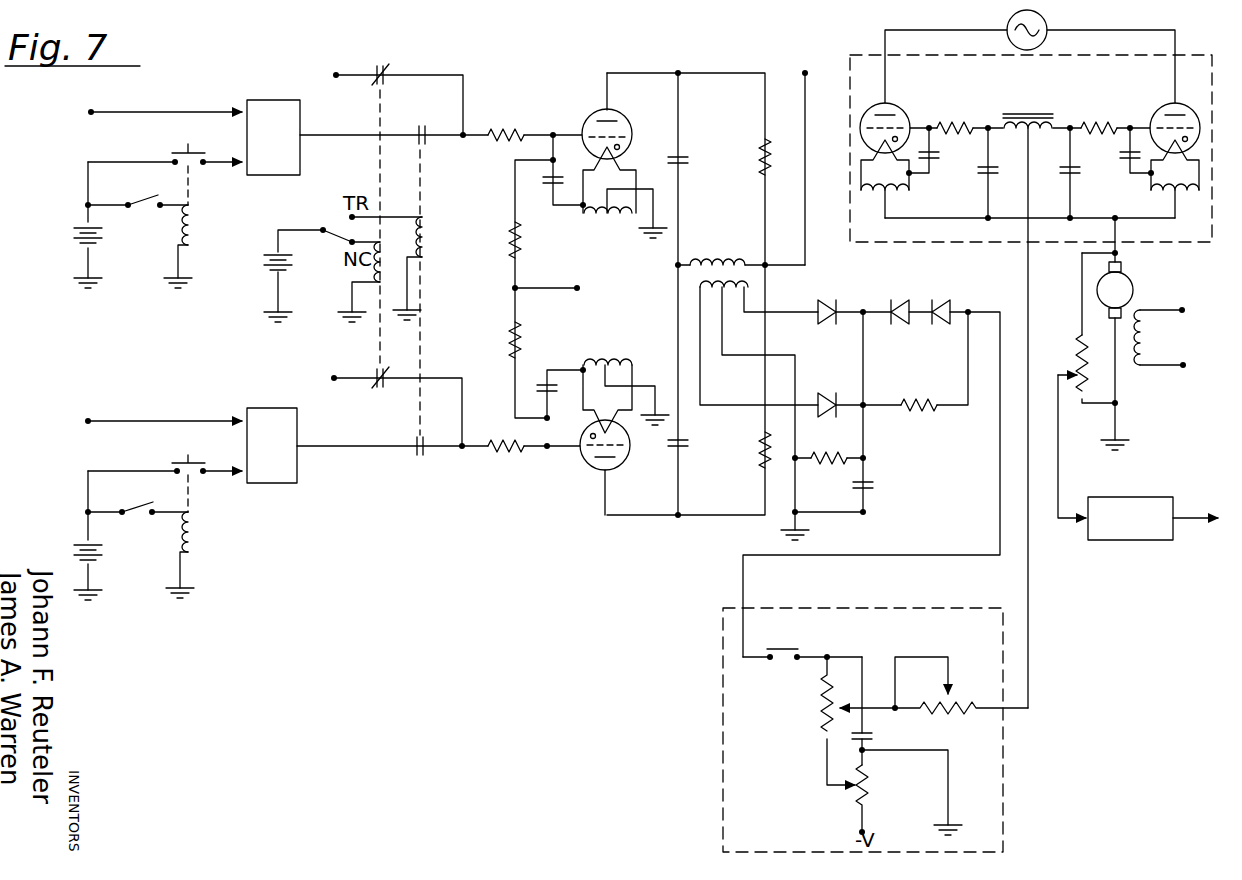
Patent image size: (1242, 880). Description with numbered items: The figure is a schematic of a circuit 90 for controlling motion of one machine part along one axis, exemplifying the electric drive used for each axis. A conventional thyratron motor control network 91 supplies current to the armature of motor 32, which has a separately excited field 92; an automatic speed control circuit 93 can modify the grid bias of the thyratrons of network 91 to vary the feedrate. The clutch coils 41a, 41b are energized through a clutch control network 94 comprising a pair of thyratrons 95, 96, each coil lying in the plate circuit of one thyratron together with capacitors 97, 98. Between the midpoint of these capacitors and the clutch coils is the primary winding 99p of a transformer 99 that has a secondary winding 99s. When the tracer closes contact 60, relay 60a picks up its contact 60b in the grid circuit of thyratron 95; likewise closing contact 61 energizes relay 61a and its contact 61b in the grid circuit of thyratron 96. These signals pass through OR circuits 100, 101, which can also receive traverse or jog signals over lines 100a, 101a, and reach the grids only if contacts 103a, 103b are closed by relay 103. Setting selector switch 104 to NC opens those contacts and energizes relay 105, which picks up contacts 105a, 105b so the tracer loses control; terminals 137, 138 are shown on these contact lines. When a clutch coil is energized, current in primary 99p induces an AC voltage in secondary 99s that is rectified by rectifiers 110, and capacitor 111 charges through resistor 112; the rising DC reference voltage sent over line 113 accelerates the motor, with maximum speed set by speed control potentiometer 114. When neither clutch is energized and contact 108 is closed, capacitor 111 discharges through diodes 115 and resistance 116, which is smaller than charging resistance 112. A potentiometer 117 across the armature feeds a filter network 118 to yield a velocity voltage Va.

The line 100a is at (203, 110).
The OR circuit 100 is at (300, 120).
The contact 60b is at (165, 163).
The contact 60 is at (150, 200).
The relay 60a is at (194, 232).
The input terminal 137 is at (334, 75).
The contact 105a is at (382, 68).
The contact 103a is at (424, 126).
The relay 103 is at (428, 241).
The selector switch 104 is at (341, 242).
The relay 105 is at (392, 287).
The line 101a is at (160, 419).
The OR circuit 101 is at (297, 430).
The contact 61b is at (165, 471).
The contact 61 is at (136, 508).
The relay 61a is at (195, 540).
The input terminal 138 is at (330, 378).
The contact 105b is at (388, 386).
The contact 103b is at (420, 457).
The circuit 90 is at (499, 459).
The clutch control network 94 is at (645, 296).
The thyratron 95 is at (630, 123).
The thyratron 96 is at (628, 460).
The capacitor 97 is at (689, 158).
The capacitor 98 is at (690, 444).
The clutch coil 41a is at (768, 152).
The clutch coil 41b is at (762, 452).
The transformer 99 is at (746, 369).
The primary winding 99p is at (719, 259).
The secondary winding 99s is at (733, 300).
The rectifiers 110 is at (818, 300).
The diodes 115 is at (955, 300).
The resistor 112 is at (917, 399).
The resistance 116 is at (829, 445).
The thyratron motor control network 91 is at (850, 58).
The motor 32 is at (1128, 283).
The potentiometer 117 is at (1079, 385).
The field 92 is at (1147, 354).
The filter network 118 is at (1133, 541).
The automatic speed control circuit 93 is at (722, 722).
The contact 108 is at (782, 661).
The speed control potentiometer 114 is at (821, 720).
The line 113 is at (1030, 603).
The capacitor 111 is at (876, 737).